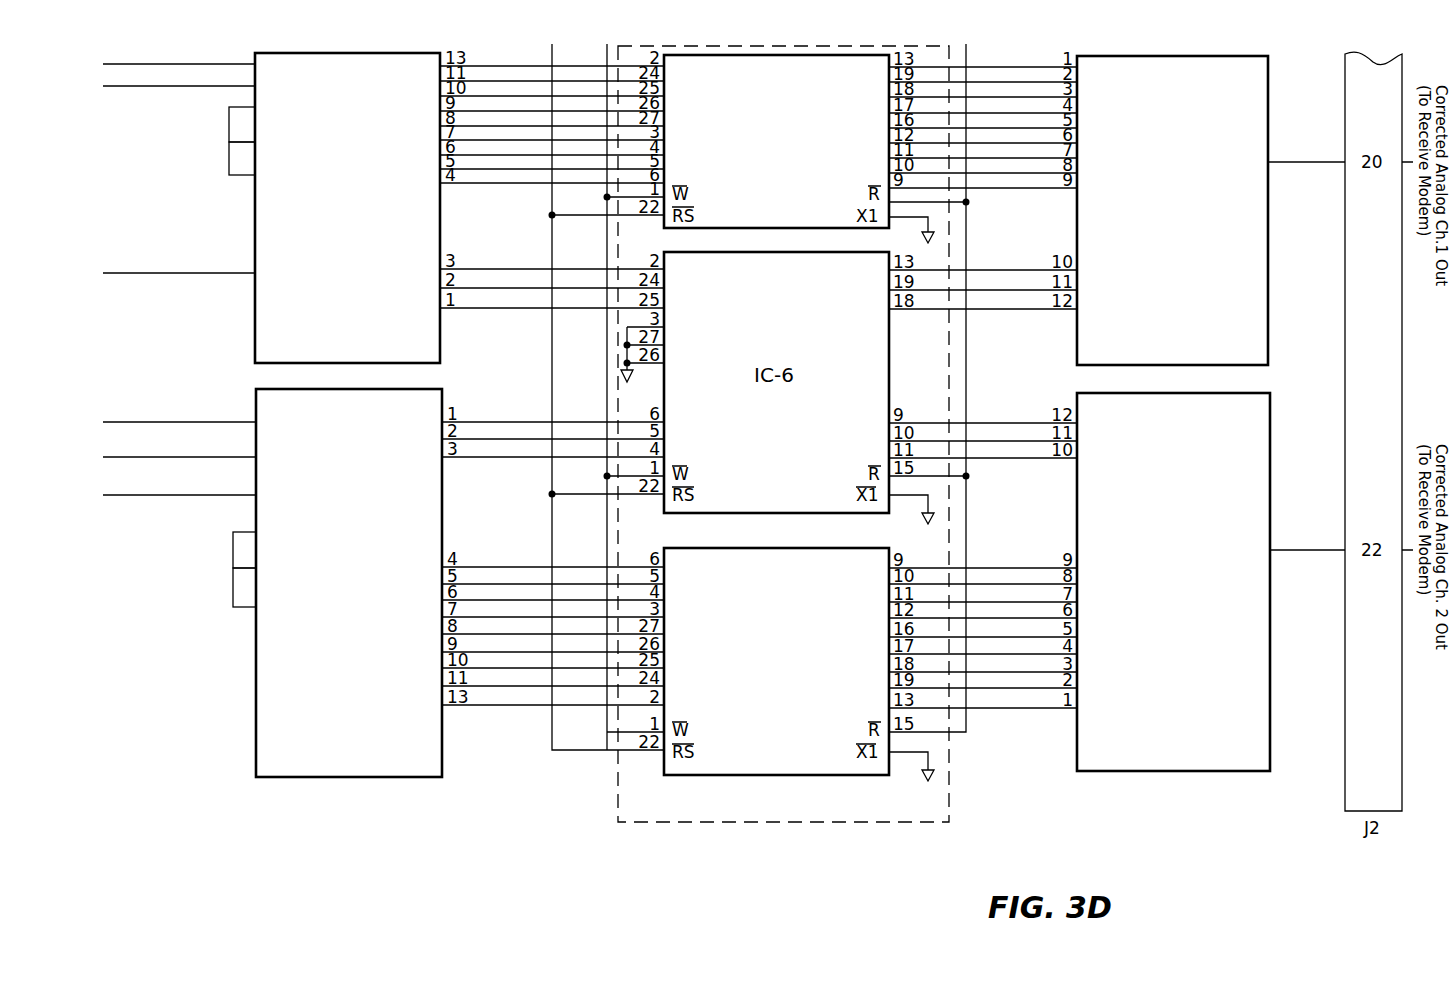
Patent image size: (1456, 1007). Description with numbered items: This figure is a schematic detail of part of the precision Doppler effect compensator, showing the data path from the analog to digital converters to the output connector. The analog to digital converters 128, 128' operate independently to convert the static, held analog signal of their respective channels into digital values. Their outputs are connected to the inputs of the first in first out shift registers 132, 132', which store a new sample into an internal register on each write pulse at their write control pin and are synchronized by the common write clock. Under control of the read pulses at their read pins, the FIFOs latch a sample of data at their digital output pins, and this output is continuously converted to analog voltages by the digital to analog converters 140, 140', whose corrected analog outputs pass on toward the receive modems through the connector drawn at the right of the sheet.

The analog to digital converter 128 is at (271, 203).
The analog to digital converter 128' is at (272, 583).
The first in first out shift register 132 is at (783, 456).
The first in first out shift register 132' is at (776, 707).
The digital to analog converter 140 is at (1211, 210).
The digital to analog converter 140' is at (1211, 582).